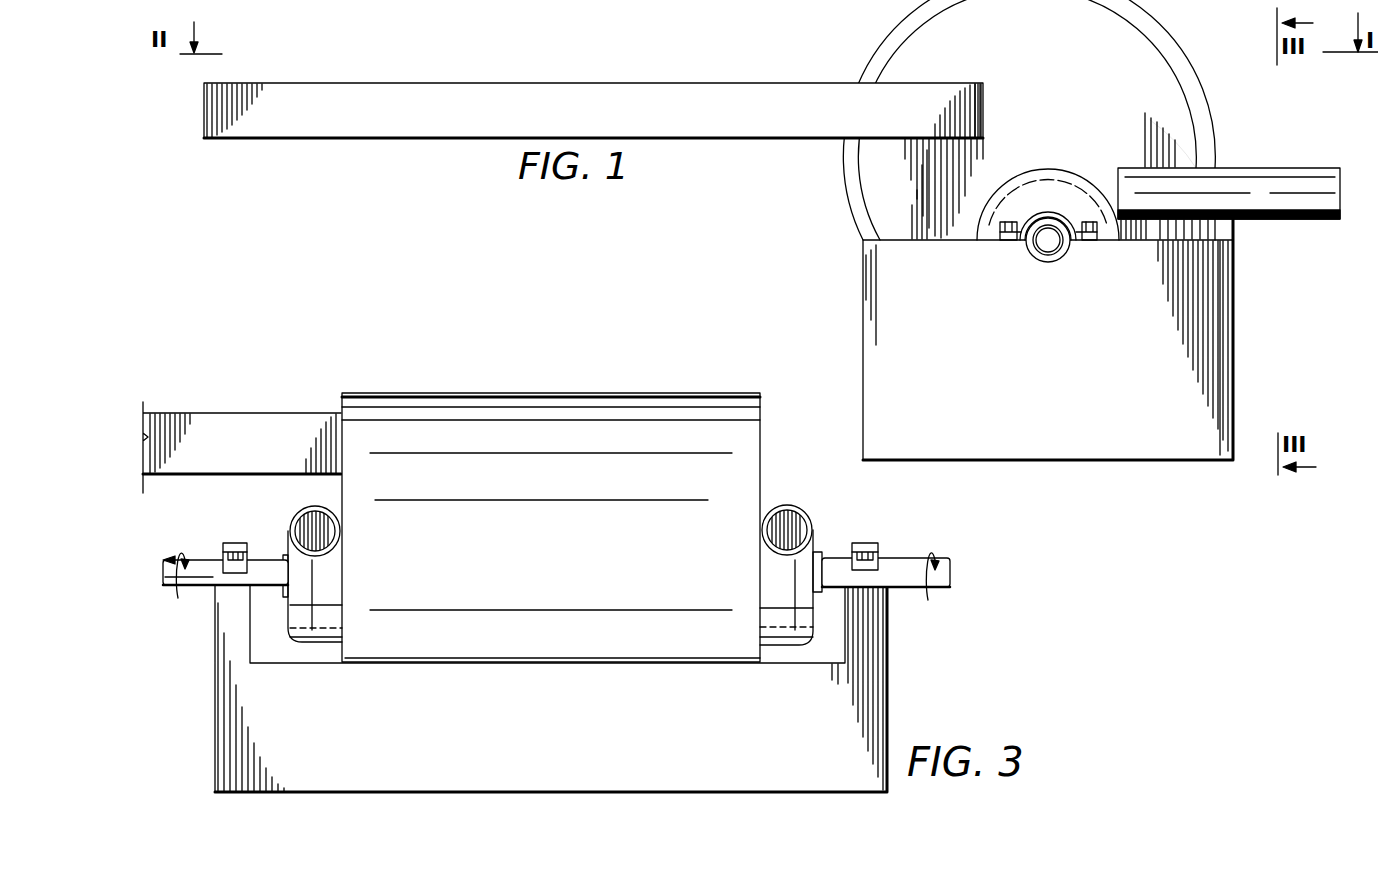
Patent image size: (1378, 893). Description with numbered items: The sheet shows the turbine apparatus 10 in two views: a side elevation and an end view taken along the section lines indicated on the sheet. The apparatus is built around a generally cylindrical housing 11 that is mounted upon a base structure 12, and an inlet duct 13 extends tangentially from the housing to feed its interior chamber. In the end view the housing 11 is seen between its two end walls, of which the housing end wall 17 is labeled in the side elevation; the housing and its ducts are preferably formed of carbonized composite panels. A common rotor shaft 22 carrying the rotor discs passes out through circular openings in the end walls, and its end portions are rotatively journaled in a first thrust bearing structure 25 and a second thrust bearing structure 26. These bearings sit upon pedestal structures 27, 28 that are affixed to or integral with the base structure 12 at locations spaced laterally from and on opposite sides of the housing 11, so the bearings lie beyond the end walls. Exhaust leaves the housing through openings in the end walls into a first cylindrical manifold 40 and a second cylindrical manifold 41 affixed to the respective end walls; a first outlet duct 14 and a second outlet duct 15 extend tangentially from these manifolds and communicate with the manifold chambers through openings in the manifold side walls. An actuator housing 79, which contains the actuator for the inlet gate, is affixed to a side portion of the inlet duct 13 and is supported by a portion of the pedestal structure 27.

In FIG. 1, the turbine apparatus 10 is at (768, 226).
In FIG. 3, the turbine apparatus 10 is at (332, 352).
In FIG. 1, the housing 11 is at (1168, 100).
In FIG. 3, the housing 11 is at (540, 388).
In FIG. 1, the base structure 12 is at (1240, 392).
In FIG. 3, the base structure 12 is at (893, 723).
In FIG. 1, the inlet duct 13 is at (570, 78).
In FIG. 1, the first outlet duct 14 is at (1277, 172).
In FIG. 3, the first outlet duct 14 is at (302, 513).
In FIG. 3, the second outlet duct 15 is at (800, 513).
In FIG. 1, the housing end wall 17 is at (1178, 156).
In FIG. 1, the shaft 22 is at (1060, 252).
In FIG. 3, the shaft 22 is at (950, 578).
In FIG. 3, the first thrust bearing structure 25 is at (223, 543).
In FIG. 3, the second thrust bearing structure 26 is at (868, 543).
In FIG. 1, the pedestal structure 27 is at (1226, 302).
In FIG. 3, the pedestal structure 27 is at (222, 632).
In FIG. 3, the pedestal structure 28 is at (893, 626).
In FIG. 1, the first cylindrical manifold 40 is at (1022, 178).
In FIG. 3, the first cylindrical manifold 40 is at (297, 638).
In FIG. 3, the second cylindrical manifold 41 is at (806, 636).
In FIG. 1, the actuator housing 79 is at (930, 94).
In FIG. 3, the actuator housing 79 is at (252, 422).